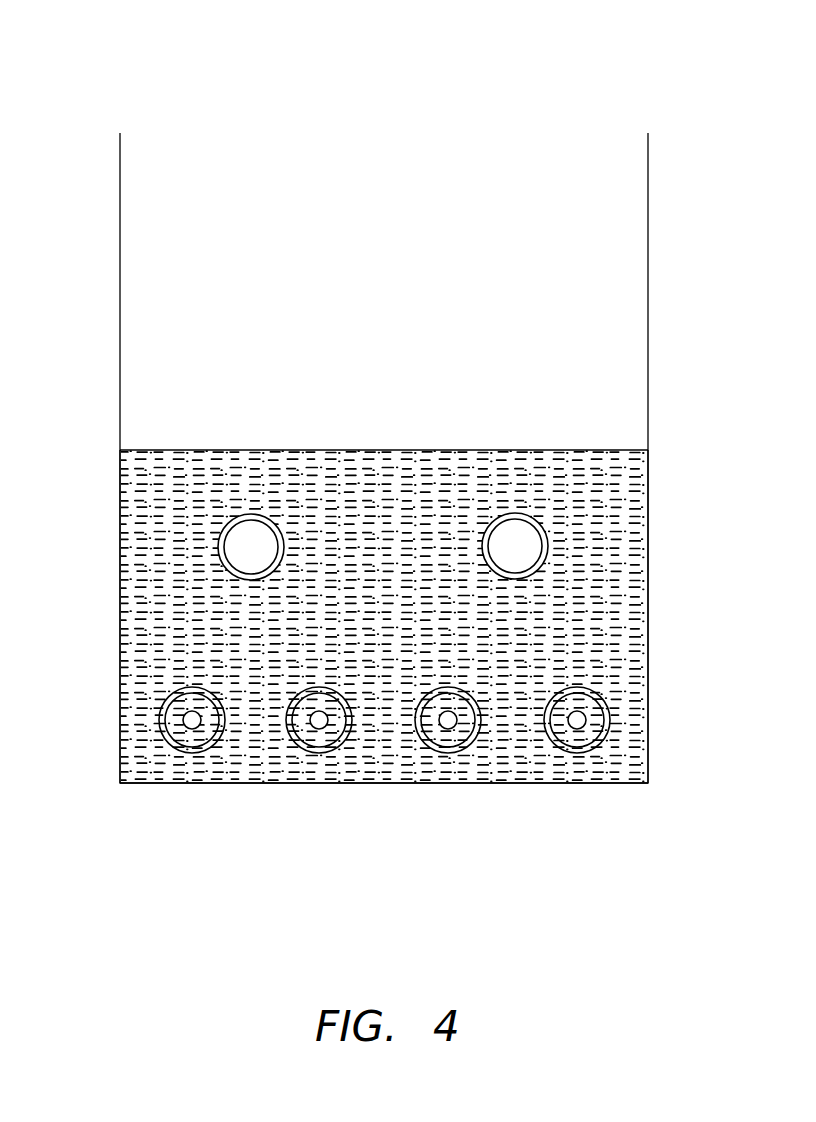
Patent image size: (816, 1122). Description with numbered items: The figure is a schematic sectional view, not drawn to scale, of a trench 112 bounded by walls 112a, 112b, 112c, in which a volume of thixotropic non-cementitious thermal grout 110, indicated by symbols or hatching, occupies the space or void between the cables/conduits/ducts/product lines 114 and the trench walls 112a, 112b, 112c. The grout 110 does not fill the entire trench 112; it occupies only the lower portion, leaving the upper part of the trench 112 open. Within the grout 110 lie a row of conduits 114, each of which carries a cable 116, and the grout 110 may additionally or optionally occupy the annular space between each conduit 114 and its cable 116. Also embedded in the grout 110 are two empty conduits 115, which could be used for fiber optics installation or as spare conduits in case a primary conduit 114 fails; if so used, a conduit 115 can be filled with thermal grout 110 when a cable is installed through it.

The trench 112 is at (616, 86).
The wall of trench 112a is at (120, 580).
The wall of trench 112b is at (648, 612).
The wall of trench 112c is at (390, 783).
The thixotropic non-cementitious thermal grout 110 is at (424, 450).
The empty conduit 115 is at (222, 532).
The conduit 114 is at (609, 716).
The cable 116 is at (455, 733).